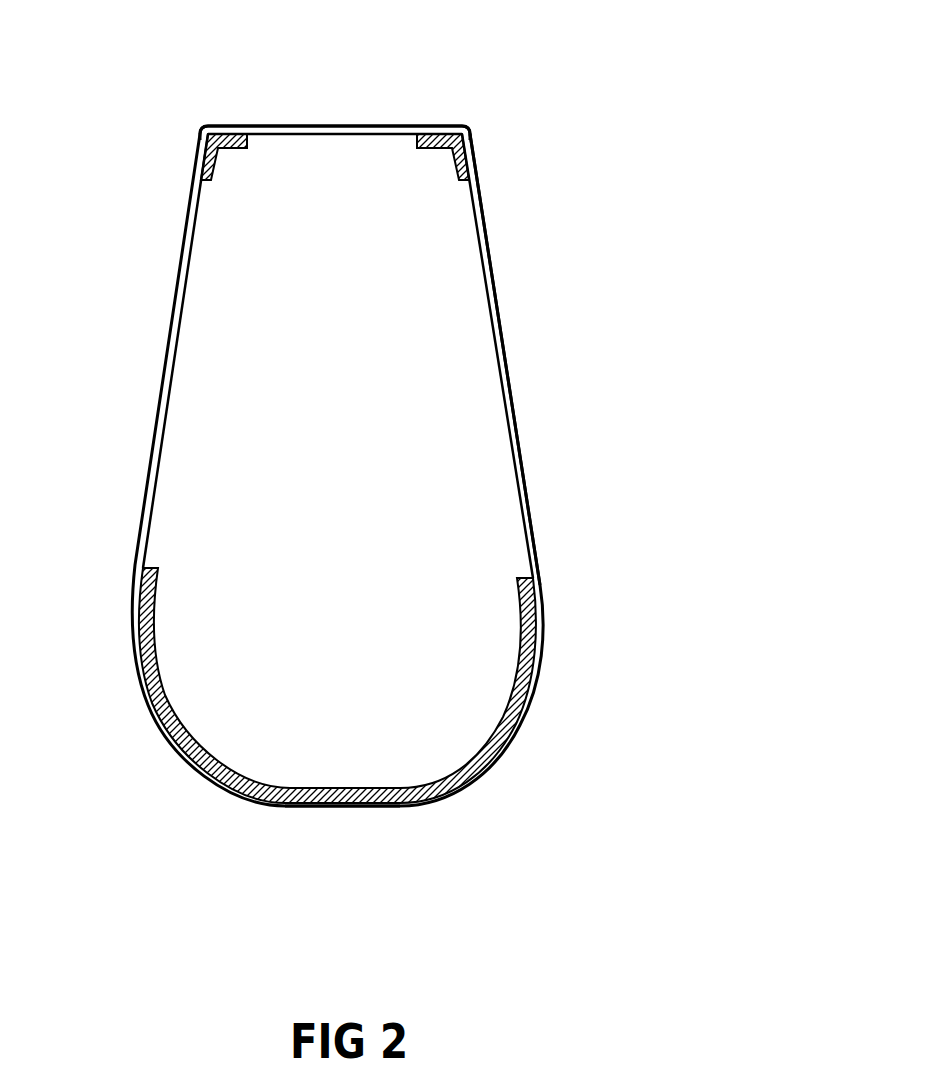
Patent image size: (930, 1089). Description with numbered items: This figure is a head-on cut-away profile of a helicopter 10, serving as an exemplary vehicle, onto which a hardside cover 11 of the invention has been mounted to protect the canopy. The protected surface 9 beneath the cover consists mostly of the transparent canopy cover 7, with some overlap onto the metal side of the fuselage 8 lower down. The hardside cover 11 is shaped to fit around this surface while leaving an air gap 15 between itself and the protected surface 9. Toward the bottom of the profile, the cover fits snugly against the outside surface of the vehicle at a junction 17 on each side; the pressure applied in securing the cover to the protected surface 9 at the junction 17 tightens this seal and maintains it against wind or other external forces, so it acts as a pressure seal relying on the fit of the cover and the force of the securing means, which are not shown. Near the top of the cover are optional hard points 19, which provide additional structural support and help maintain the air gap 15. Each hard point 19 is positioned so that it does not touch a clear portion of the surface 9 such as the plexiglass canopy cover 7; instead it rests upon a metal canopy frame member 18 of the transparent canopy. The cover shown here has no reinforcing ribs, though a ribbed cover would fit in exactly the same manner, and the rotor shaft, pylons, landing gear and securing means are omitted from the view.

The transparent canopy cover 7 is at (190, 270).
The metal side of the fuselage 8 is at (347, 807).
The protected surface 9 is at (178, 602).
The helicopter 10 is at (633, 473).
The hardside cover 11 is at (506, 352).
The air gap 15 is at (484, 272).
The junction 17 is at (634, 672).
The metal canopy frame member 18 is at (415, 200).
The hard point 19 is at (457, 134).